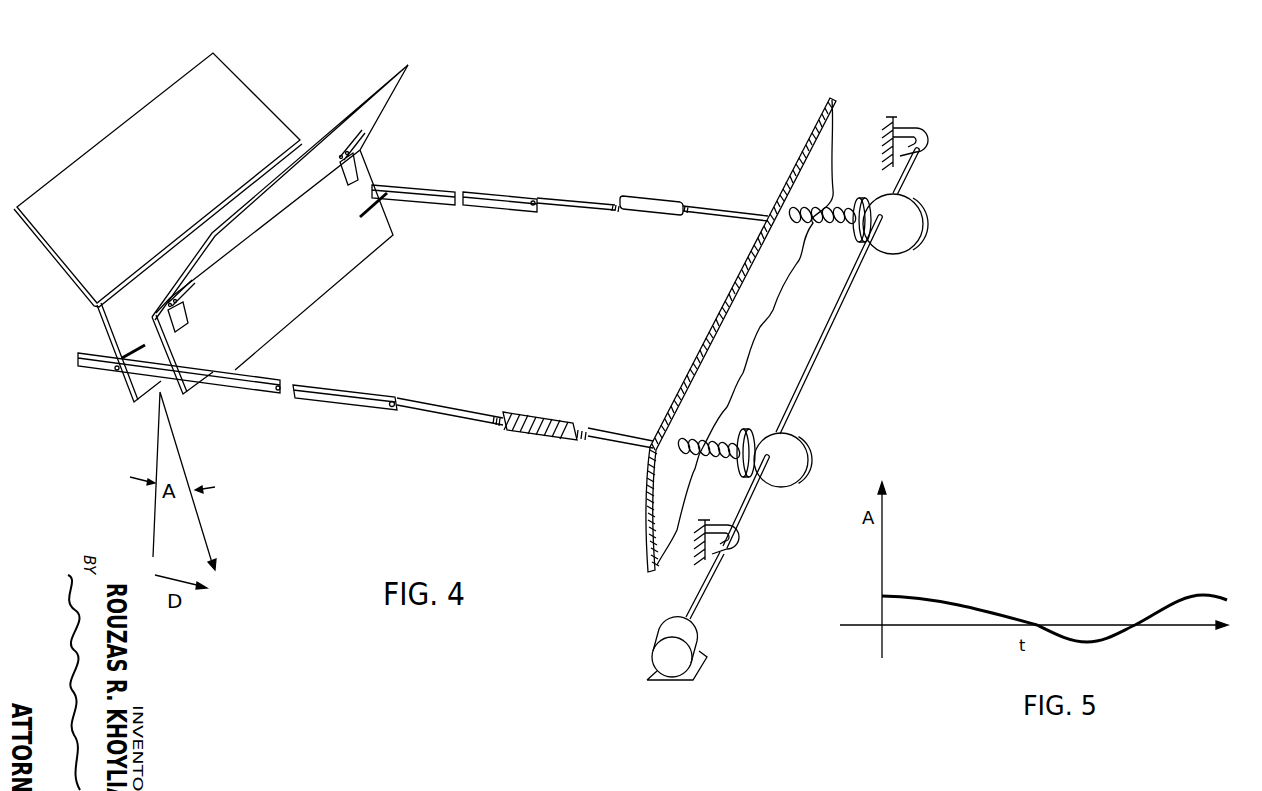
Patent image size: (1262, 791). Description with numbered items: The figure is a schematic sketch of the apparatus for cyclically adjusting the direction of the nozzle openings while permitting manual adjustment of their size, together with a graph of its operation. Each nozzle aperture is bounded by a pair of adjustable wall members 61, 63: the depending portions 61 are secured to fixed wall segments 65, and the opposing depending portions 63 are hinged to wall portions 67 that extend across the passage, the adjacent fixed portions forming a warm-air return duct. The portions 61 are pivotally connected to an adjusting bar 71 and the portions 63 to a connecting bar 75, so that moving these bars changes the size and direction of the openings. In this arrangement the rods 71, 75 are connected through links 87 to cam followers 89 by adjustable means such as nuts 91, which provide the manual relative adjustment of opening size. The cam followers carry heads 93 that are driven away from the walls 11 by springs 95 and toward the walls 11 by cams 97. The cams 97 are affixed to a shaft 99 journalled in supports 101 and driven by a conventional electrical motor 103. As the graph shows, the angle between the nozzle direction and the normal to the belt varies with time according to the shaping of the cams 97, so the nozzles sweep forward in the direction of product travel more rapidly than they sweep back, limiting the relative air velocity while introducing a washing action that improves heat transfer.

The walls 11 is at (737, 310).
The adjustable wall member 61 is at (116, 326).
The adjustable wall member 63 is at (287, 309).
The fixed wall segment 65 is at (229, 91).
The wall portion 67 is at (375, 115).
The adjusting bar 71 is at (245, 386).
The connecting bar 75 is at (481, 191).
The link 87 is at (442, 408).
The cam follower 89 is at (608, 430).
The nut 91 is at (533, 413).
The head 93 is at (866, 203).
The spring 95 is at (832, 223).
The cam 97 is at (913, 230).
The shaft 99 is at (830, 333).
The support 101 is at (928, 148).
The electrical motor 103 is at (662, 652).